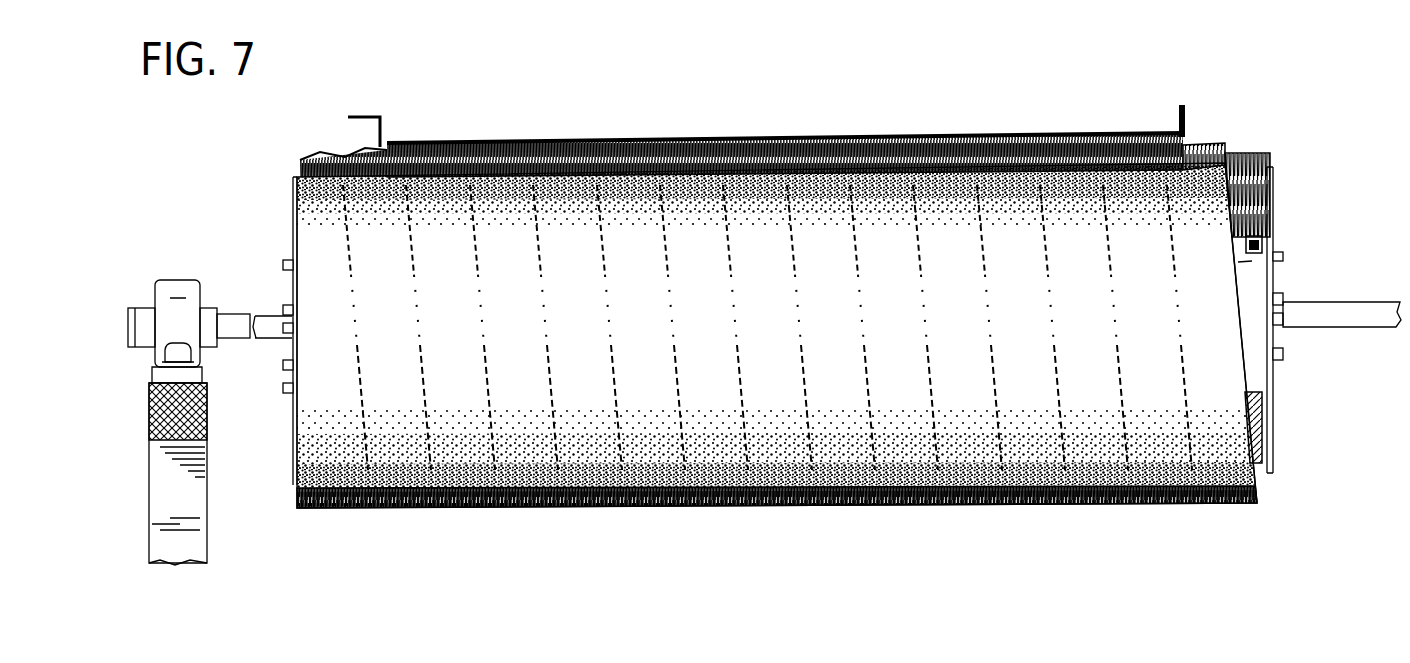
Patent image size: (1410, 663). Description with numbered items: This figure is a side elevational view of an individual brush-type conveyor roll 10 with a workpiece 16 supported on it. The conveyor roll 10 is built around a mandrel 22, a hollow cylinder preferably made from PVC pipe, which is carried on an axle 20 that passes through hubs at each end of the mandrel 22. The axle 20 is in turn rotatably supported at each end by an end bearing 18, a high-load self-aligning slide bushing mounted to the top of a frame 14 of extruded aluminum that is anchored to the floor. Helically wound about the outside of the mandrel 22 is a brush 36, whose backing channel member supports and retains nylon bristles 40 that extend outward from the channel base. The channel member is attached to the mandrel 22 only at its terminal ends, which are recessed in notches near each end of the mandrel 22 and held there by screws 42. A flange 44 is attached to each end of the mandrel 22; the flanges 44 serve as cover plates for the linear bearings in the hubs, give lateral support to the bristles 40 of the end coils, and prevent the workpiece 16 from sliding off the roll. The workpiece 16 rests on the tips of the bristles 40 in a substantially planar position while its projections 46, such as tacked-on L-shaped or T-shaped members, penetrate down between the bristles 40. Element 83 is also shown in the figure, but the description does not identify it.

The conveyor roll 10 is at (900, 505).
The frame 14 is at (150, 433).
The workpiece 16 is at (614, 113).
The end bearing 18 is at (166, 282).
The axle 20 is at (262, 318).
The mandrel 22 is at (1255, 292).
The brush 36 is at (742, 506).
The bristles 40 is at (461, 510).
The screws 42 is at (1256, 236).
The flange 44 is at (292, 180).
The projections 46 is at (347, 153).
The fastener 83 is at (1264, 250).